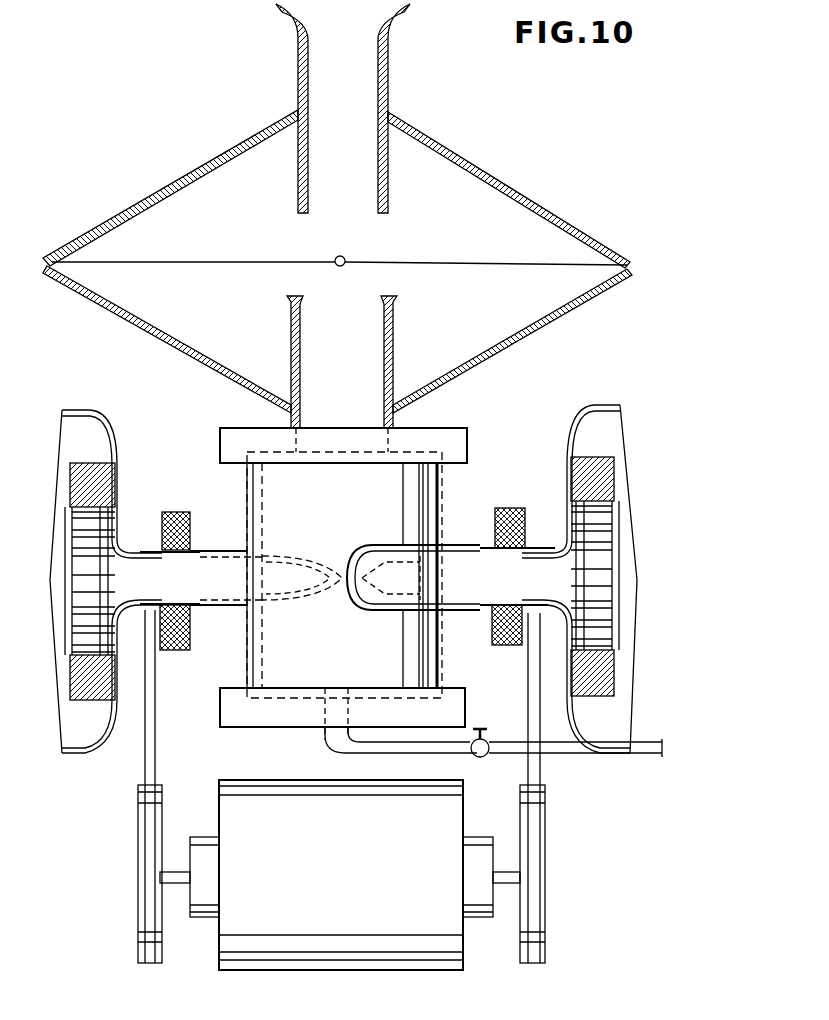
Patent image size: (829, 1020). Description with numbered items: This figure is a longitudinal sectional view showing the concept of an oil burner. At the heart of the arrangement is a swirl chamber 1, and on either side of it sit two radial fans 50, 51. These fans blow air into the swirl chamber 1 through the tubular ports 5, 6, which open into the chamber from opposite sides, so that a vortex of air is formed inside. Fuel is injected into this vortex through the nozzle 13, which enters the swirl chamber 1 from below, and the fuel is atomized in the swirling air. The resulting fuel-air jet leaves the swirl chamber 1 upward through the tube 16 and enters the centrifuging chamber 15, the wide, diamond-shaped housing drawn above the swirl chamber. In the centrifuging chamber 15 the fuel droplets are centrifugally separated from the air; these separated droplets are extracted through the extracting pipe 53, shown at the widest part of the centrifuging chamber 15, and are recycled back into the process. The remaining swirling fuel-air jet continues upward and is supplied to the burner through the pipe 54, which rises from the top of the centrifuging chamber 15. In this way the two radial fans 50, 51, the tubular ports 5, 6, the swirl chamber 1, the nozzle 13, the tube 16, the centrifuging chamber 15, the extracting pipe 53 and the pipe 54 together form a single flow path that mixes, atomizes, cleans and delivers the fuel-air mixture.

The swirl chamber 1 is at (262, 656).
The tubular port 5 is at (208, 550).
The tubular port 6 is at (455, 560).
The nozzle 13 is at (335, 712).
The centrifuging chamber 15 is at (460, 167).
The tube 16 is at (393, 336).
The radial fan 50 is at (60, 567).
The radial fan 51 is at (617, 552).
The extracting pipe 53 is at (346, 258).
The pipe 54 is at (388, 82).